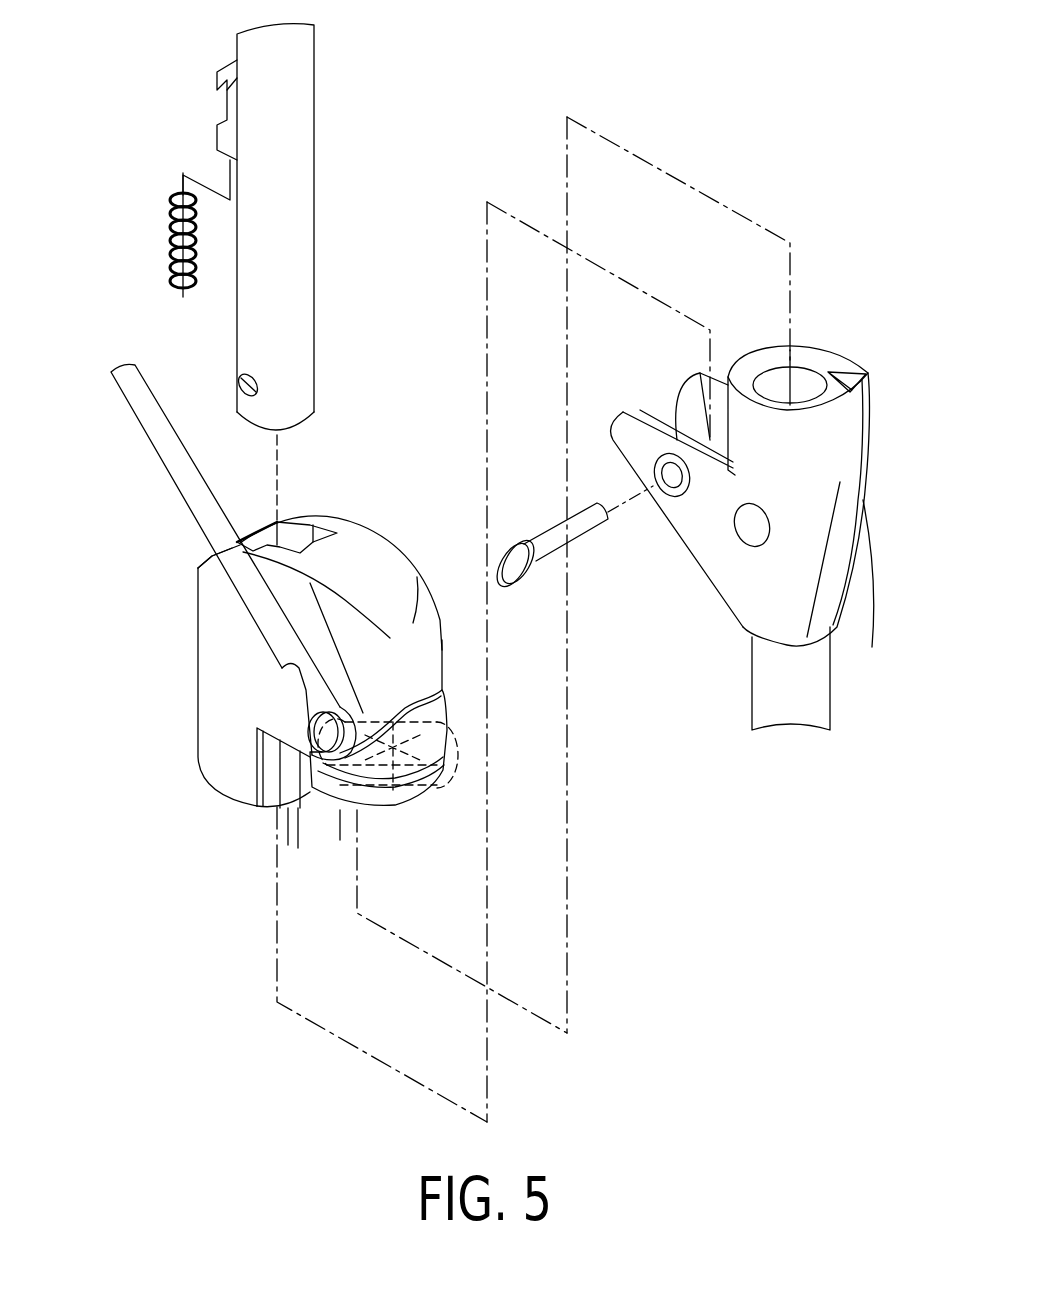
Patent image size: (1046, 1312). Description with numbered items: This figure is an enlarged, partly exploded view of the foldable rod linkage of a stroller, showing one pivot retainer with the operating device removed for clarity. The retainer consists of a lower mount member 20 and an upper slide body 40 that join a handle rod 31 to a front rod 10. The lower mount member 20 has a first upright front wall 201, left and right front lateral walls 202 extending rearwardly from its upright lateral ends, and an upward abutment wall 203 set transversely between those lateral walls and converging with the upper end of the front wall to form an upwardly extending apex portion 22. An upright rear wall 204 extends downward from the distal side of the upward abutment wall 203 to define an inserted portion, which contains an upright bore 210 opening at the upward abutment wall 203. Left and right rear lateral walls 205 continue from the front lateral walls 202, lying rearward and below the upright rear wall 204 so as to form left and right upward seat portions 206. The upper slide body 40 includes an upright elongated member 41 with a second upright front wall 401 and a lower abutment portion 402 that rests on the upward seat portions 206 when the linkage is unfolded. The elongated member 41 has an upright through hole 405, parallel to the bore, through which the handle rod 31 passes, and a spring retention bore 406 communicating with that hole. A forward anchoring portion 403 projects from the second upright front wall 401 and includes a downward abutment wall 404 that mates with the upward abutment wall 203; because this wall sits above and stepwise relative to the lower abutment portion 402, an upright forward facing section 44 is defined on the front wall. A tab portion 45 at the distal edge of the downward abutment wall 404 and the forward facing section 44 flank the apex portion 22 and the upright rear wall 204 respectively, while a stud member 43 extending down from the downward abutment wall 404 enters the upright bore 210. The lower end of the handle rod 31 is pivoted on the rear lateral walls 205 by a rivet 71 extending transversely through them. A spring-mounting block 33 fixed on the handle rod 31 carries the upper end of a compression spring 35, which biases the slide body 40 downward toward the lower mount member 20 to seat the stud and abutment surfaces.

The front rod 10 is at (748, 692).
The lower mount member 20 is at (758, 457).
The apex portion 22 is at (845, 392).
The first upright front wall 201 is at (817, 507).
The left and right front lateral walls 202 is at (876, 590).
The upward abutment wall 203 is at (838, 372).
The upright rear wall 204 is at (693, 387).
The left and right rear lateral walls 205 is at (685, 527).
The left and right upward seat portions 206 is at (650, 412).
The upright bore 210 is at (775, 383).
The handle rod 31 is at (315, 138).
The spring-mounting block 33 is at (217, 73).
The compression spring 35 is at (170, 230).
The upper slide body 40 is at (372, 673).
The upright elongated member 41 is at (237, 660).
The stud member 43 is at (340, 840).
The upright forward facing section 44 is at (298, 848).
The tab portion 45 is at (447, 792).
The rivet 71 is at (517, 577).
The second upright front wall 401 is at (288, 845).
The lower abutment portion 402 is at (222, 763).
The forward anchoring portion 403 is at (373, 572).
The downward abutment wall 404 is at (447, 765).
The upright through hole 405 is at (267, 525).
The spring retention bore 406 is at (200, 562).